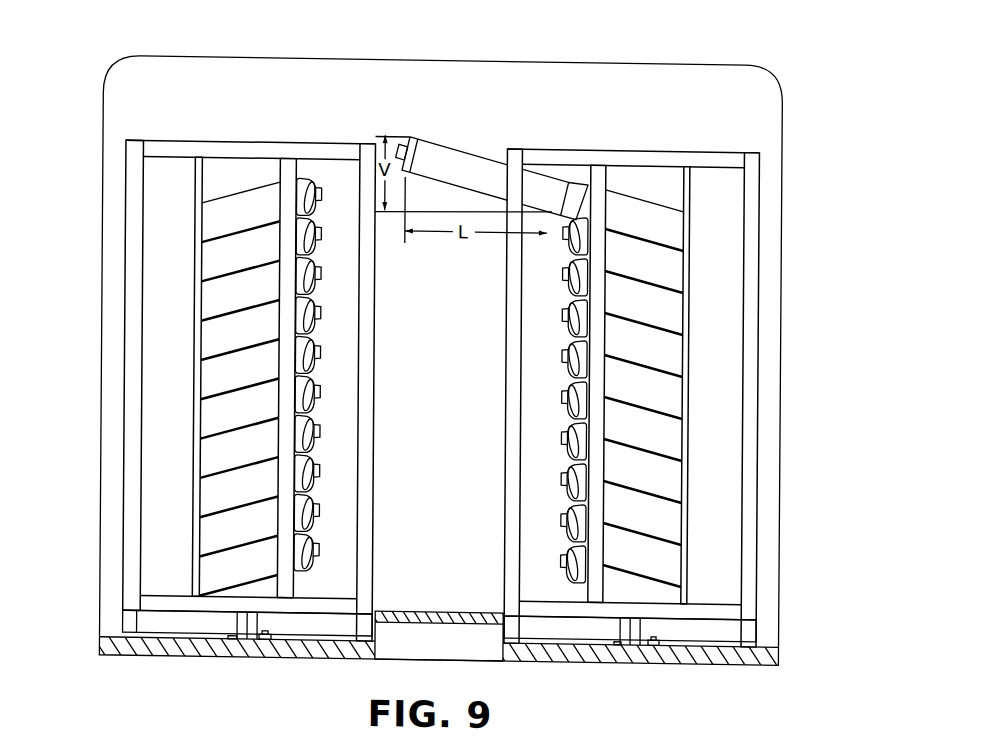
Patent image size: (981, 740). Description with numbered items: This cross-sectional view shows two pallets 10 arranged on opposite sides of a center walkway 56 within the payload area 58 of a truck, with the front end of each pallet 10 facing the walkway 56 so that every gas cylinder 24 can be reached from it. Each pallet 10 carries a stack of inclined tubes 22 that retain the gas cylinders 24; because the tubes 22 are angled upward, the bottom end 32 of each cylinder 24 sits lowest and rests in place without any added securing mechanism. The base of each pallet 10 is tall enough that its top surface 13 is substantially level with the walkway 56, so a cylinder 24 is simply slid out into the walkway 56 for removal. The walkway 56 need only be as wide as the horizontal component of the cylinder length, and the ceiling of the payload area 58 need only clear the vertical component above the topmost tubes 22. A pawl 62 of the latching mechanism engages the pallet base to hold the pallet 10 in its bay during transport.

The payload area 58 is at (621, 87).
The pallet 10 is at (150, 149).
The gas cylinder 24 is at (446, 138).
The bottom end 32 is at (562, 190).
The tube 22 is at (637, 210).
The top surface 13 is at (344, 614).
The center walkway 56 is at (430, 610).
The pawl 62 is at (264, 642).